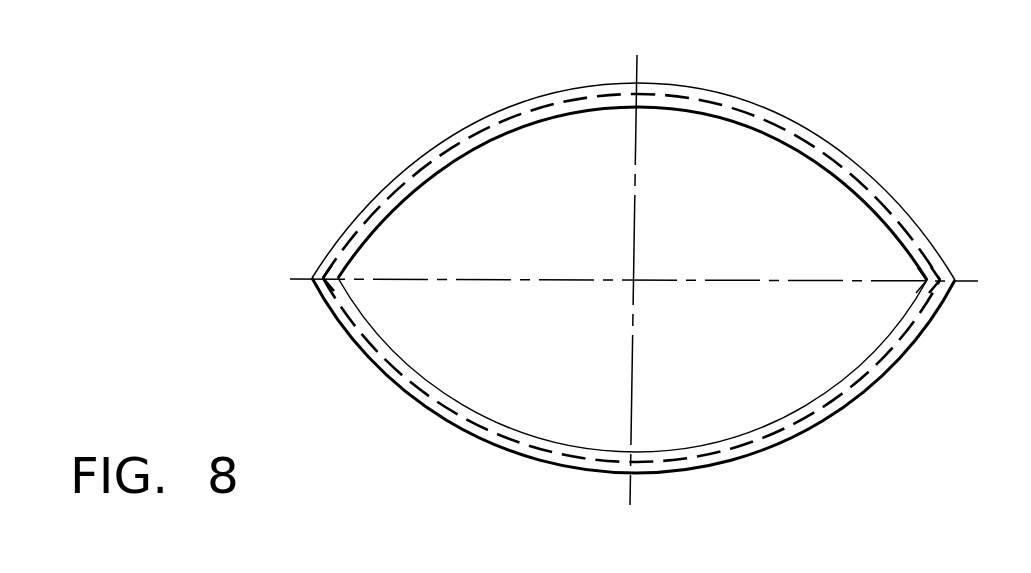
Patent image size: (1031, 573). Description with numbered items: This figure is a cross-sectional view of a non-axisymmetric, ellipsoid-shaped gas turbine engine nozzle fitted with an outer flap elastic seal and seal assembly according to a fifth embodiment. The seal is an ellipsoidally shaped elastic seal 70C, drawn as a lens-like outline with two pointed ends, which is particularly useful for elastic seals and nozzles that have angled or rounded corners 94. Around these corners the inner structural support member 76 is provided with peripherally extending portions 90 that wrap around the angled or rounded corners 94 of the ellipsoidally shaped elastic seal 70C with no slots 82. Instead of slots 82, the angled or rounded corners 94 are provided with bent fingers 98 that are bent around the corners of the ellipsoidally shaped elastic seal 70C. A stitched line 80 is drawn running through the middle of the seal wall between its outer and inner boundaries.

The ellipsoidally shaped elastic seal 70C is at (927, 107).
The inner structural support member 76 is at (866, 182).
The stitch line 80 is at (742, 113).
The slots 82 is at (675, 95).
The peripherally extending portions 90 is at (935, 265).
The angled or rounded corners 94 is at (925, 278).
The bent fingers 98 is at (330, 271).